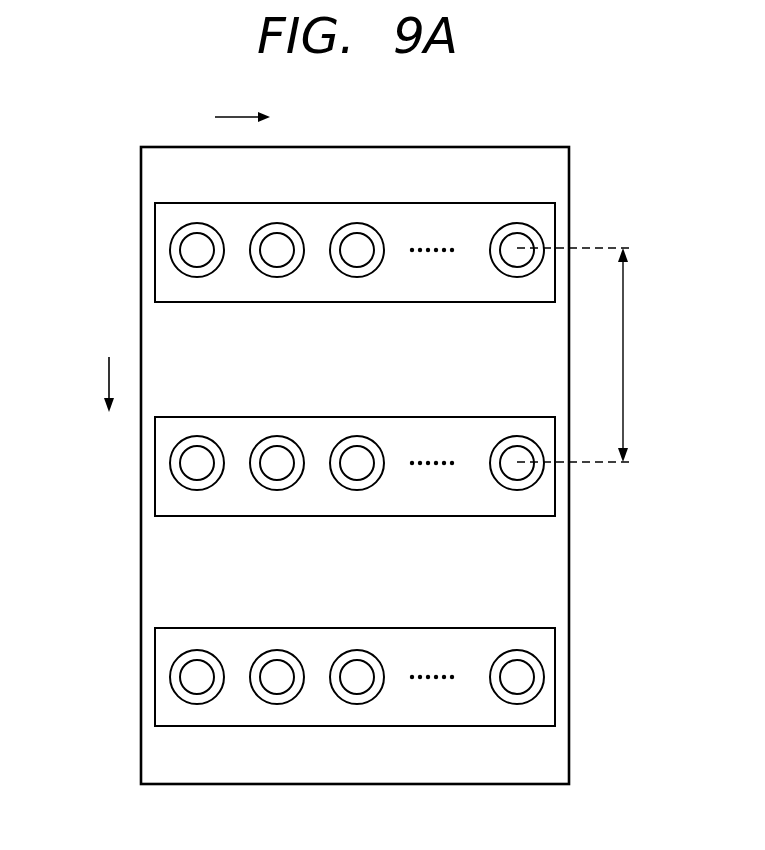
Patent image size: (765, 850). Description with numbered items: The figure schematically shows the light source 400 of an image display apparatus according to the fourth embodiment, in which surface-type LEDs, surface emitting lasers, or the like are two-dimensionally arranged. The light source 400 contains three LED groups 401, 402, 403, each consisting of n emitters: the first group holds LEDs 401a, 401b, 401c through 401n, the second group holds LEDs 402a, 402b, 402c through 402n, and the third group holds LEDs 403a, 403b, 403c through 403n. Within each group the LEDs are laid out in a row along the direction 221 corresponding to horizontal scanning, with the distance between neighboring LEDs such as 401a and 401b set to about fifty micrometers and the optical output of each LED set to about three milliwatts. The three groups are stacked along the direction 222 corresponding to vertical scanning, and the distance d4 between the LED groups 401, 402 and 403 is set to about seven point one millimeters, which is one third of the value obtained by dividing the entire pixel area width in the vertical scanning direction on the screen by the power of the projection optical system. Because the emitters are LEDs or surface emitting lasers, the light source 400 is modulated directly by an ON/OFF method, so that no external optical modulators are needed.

The light source 400 is at (570, 181).
The direction corresponding to horizontal scanning 221 is at (237, 115).
The direction corresponding to vertical scanning 222 is at (106, 378).
The distance between the LED groups d4 is at (625, 342).
The LED group 401 is at (208, 203).
The LED 401a is at (193, 277).
The LED 401b is at (273, 277).
The LED 401c is at (353, 277).
The LED 401n is at (513, 277).
The LED group 402 is at (208, 417).
The LED 402a is at (193, 490).
The LED 402b is at (273, 490).
The LED 402c is at (353, 490).
The LED 402n is at (513, 490).
The LED group 403 is at (208, 628).
The LED 403a is at (193, 704).
The LED 403b is at (273, 704).
The LED 403c is at (353, 704).
The LED 403n is at (513, 704).